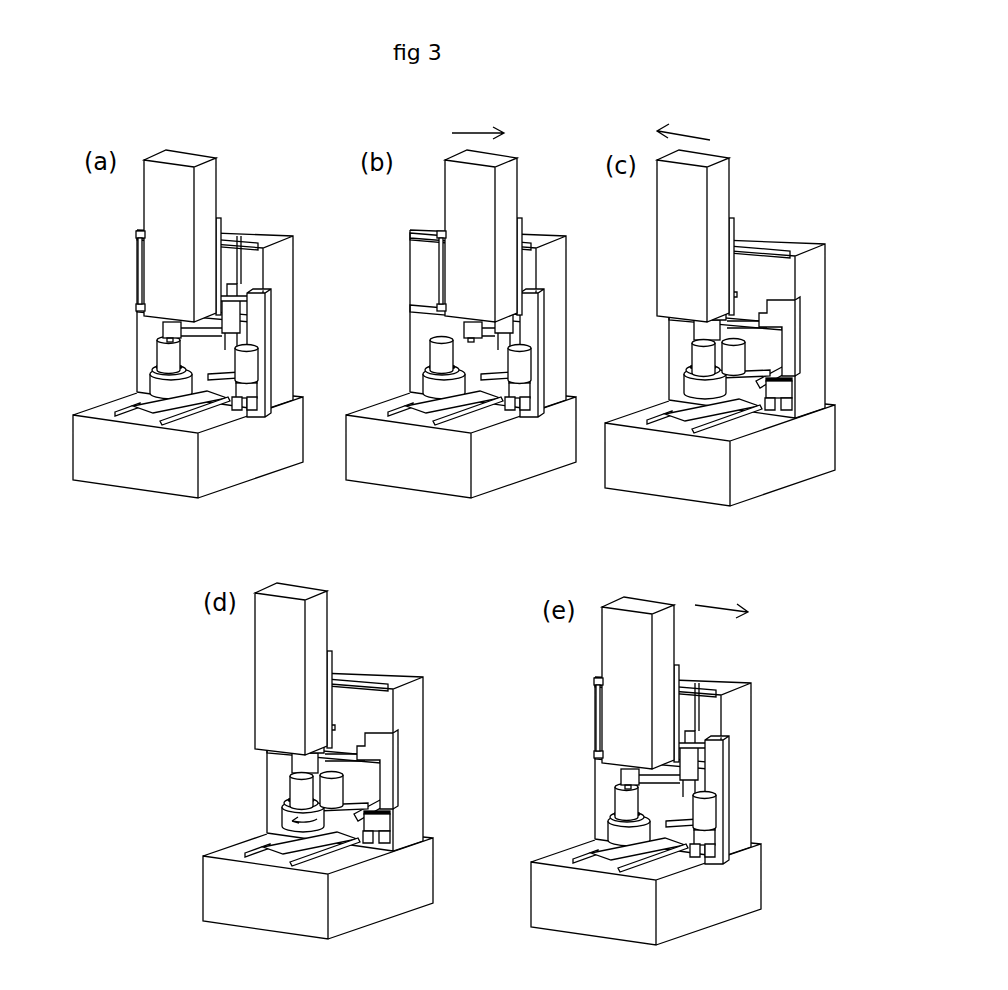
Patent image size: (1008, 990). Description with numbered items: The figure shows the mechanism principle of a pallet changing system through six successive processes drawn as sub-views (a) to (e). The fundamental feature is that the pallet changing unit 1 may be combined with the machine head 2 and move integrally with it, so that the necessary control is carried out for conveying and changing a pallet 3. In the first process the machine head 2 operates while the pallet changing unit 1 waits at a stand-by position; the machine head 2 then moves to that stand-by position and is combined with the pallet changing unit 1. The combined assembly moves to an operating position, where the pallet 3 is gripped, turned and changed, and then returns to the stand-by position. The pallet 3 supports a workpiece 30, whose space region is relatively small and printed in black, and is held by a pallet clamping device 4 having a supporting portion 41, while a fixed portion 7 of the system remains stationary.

The pallet changing unit 1 is at (532, 523).
The machine head 2 is at (205, 185).
The pallet 3 is at (260, 384).
The pallet clamping device 4 is at (165, 392).
The fixed portion 7 is at (256, 318).
The workpiece supported by pallet 30 is at (212, 354).
The supporting portion of pallet clamping device 41 is at (212, 410).